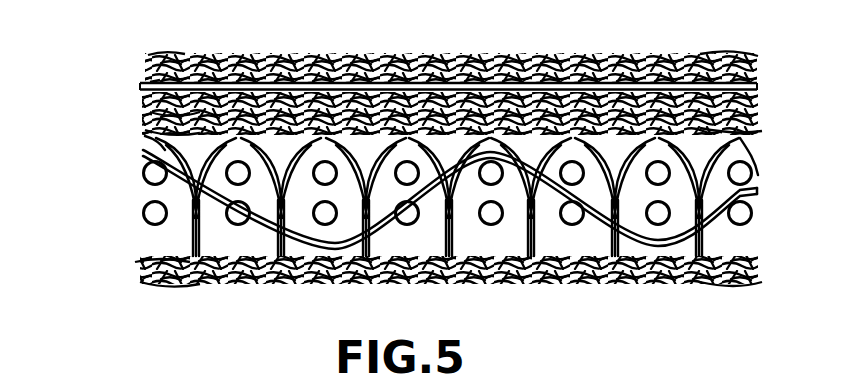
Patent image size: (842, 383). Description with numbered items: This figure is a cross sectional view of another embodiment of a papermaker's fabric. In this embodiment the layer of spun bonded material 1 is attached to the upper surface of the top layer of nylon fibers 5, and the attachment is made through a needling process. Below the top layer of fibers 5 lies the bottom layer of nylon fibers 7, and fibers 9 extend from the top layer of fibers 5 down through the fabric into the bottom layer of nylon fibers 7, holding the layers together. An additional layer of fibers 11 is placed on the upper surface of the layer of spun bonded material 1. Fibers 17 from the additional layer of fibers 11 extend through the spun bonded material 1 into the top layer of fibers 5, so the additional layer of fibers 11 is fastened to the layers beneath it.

The layer of spun bonded material 1 is at (140, 92).
The top layer of nylon fibers 5 is at (145, 133).
The bottom layer of nylon fibers 7 is at (167, 283).
The fibers 9 is at (228, 258).
The additional layer of fibers 11 is at (163, 60).
The fibers 17 is at (140, 79).